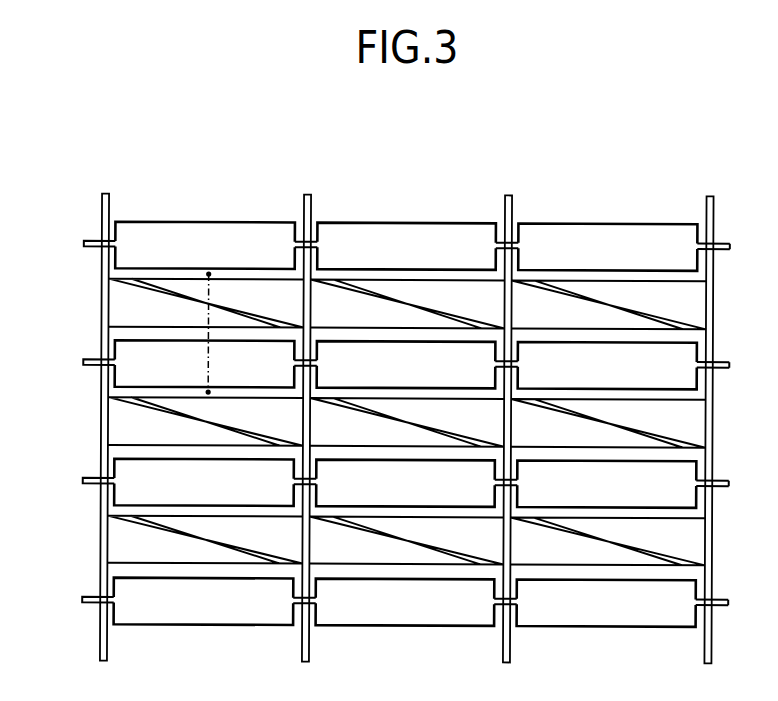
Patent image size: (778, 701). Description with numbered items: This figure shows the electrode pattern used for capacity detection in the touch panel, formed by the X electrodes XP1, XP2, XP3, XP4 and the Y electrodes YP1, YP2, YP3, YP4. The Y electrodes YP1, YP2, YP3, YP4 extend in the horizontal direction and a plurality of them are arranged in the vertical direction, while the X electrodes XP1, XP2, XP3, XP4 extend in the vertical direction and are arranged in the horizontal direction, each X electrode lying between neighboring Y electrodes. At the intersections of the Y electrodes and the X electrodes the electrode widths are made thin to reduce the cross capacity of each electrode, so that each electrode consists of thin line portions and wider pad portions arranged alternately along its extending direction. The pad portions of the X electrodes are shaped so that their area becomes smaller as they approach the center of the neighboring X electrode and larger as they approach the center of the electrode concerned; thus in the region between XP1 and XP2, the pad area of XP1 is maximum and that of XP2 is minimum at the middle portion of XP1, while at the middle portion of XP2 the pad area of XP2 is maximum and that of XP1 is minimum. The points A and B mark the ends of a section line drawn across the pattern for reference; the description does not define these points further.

The X electrode XP1 is at (104, 411).
The X electrode XP2 is at (306, 411).
The X electrode XP3 is at (507, 412).
The X electrode XP4 is at (709, 413).
The Y electrode YP1 is at (380, 245).
The Y electrode YP2 is at (379, 364).
The Y electrode YP3 is at (379, 482).
The Y electrode YP4 is at (378, 601).
The point A of section line A-B A is at (208, 258).
The point B of section line A- B is at (207, 406).